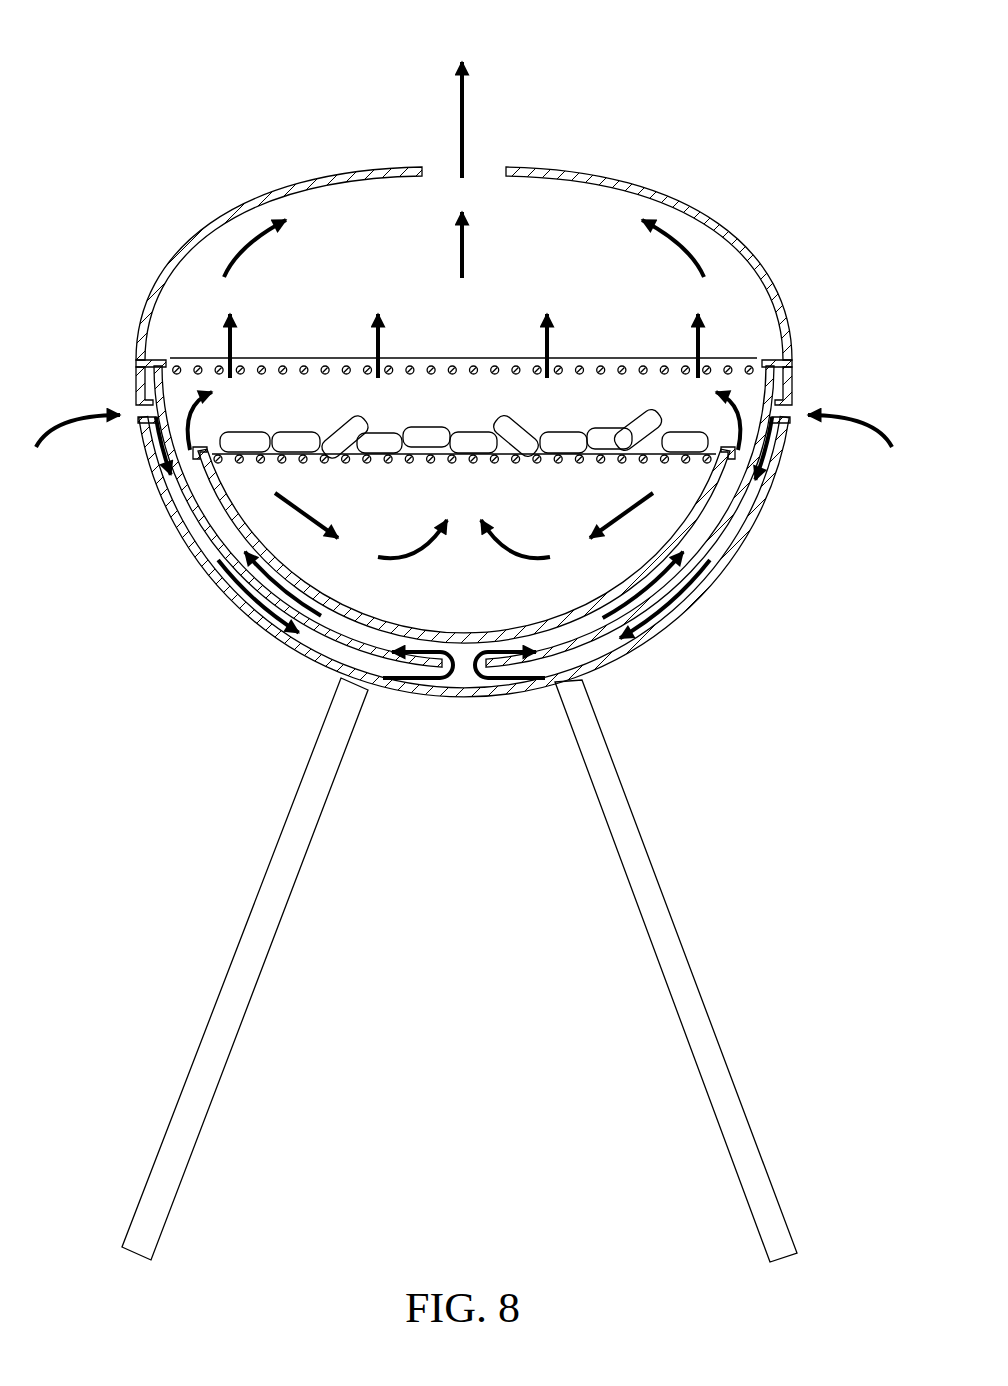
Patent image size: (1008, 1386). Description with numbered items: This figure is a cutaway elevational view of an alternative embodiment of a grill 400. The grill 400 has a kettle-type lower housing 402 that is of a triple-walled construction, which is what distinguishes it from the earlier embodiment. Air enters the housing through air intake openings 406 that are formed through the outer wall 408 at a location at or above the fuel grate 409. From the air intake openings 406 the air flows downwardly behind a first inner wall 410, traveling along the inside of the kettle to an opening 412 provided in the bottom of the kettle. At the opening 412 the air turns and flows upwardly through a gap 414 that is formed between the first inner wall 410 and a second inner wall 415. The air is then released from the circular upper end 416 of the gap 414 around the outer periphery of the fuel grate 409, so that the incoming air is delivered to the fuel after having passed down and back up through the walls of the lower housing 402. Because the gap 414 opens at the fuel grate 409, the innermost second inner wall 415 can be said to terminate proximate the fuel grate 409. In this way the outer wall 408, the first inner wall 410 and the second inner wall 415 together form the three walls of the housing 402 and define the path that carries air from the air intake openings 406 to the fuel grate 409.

The grill 400 is at (745, 103).
The lower housing 402 is at (188, 560).
The air intake openings 406 is at (120, 405).
The outer wall 408 is at (745, 553).
The fuel grate 409 is at (513, 460).
The first inner wall 410 is at (680, 614).
The opening 412 is at (462, 674).
The gap 414 is at (570, 636).
The second inner wall 415 is at (377, 628).
The circular upper end 416 is at (205, 443).